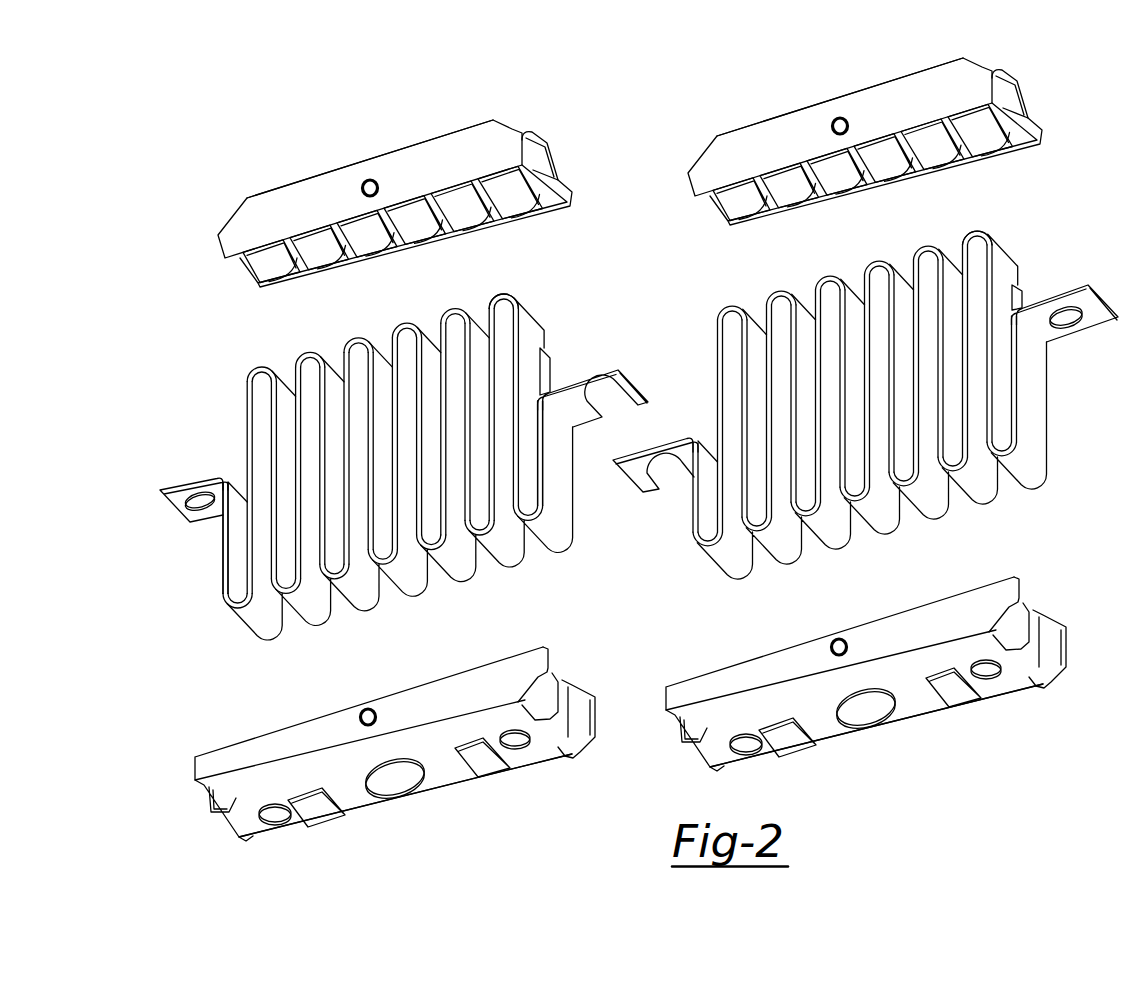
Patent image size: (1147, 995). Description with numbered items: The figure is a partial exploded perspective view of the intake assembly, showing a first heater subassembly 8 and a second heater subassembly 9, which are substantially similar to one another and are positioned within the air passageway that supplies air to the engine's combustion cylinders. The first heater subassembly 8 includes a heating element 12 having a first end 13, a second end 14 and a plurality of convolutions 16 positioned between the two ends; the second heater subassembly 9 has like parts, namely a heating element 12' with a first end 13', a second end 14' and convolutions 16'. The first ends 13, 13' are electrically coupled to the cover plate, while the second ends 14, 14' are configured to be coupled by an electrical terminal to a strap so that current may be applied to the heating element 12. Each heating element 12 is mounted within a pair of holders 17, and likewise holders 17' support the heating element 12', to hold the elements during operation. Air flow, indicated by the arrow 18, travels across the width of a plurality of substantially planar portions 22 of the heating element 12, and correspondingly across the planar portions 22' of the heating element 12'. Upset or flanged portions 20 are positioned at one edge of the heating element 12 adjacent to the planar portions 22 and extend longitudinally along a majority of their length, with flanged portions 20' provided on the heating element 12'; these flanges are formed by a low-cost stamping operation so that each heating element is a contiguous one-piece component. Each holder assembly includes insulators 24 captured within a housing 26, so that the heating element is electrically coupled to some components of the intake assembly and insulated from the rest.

The first heater subassembly 8 is at (406, 118).
The second heater subassembly 9 is at (886, 71).
The heating element 12 is at (398, 474).
The heating element 12' is at (870, 383).
The first end 13 is at (194, 471).
The first end 13' is at (1065, 338).
The second end 14 is at (605, 376).
The second end 14' is at (665, 499).
The convolutions 16 is at (382, 334).
The convolutions 16' is at (855, 279).
The holders 17 is at (383, 460).
The holders 17' is at (871, 396).
The arrow 18 is at (203, 393).
The flanged portions 20 is at (572, 358).
The flanged portions 20' is at (1060, 281).
The planar portions 22 is at (540, 317).
The planar portions 22' is at (1012, 255).
The insulators 24 is at (505, 212).
The housing 26 is at (252, 222).